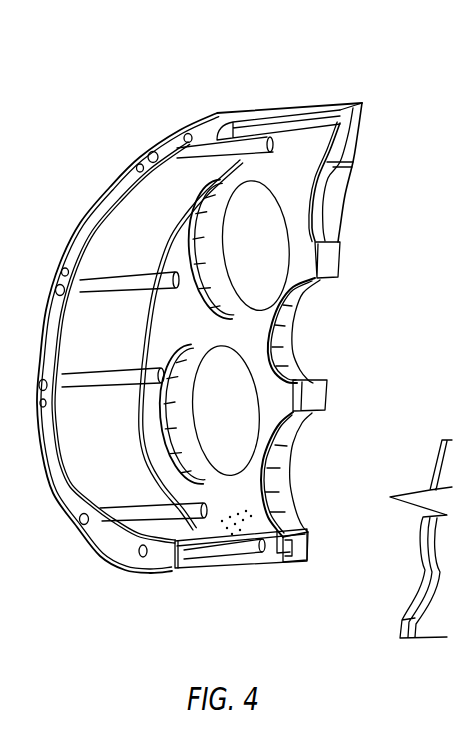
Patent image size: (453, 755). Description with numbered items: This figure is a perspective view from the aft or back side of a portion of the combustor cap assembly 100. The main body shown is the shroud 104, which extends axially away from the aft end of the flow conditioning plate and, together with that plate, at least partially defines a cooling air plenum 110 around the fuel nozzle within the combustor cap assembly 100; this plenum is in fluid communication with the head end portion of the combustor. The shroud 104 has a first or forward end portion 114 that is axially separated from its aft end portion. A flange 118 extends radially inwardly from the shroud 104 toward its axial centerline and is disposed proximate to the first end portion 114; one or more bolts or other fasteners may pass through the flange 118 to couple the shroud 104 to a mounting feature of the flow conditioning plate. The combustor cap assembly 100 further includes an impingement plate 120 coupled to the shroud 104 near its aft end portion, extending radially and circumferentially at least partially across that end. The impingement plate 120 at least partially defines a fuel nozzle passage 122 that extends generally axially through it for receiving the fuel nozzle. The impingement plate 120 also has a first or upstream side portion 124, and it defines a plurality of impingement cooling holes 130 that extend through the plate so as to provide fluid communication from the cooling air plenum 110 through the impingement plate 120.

The combustor cap assembly 100 is at (244, 337).
The shroud 104 is at (233, 567).
The cooling air plenum 110 is at (122, 425).
The first end portion 114 is at (217, 382).
The flange 118 is at (113, 544).
The impingement plate 120 is at (347, 232).
The fuel nozzle passage 122 is at (305, 487).
The first side portion 124 is at (278, 343).
The impingement cooling holes 130 is at (240, 512).